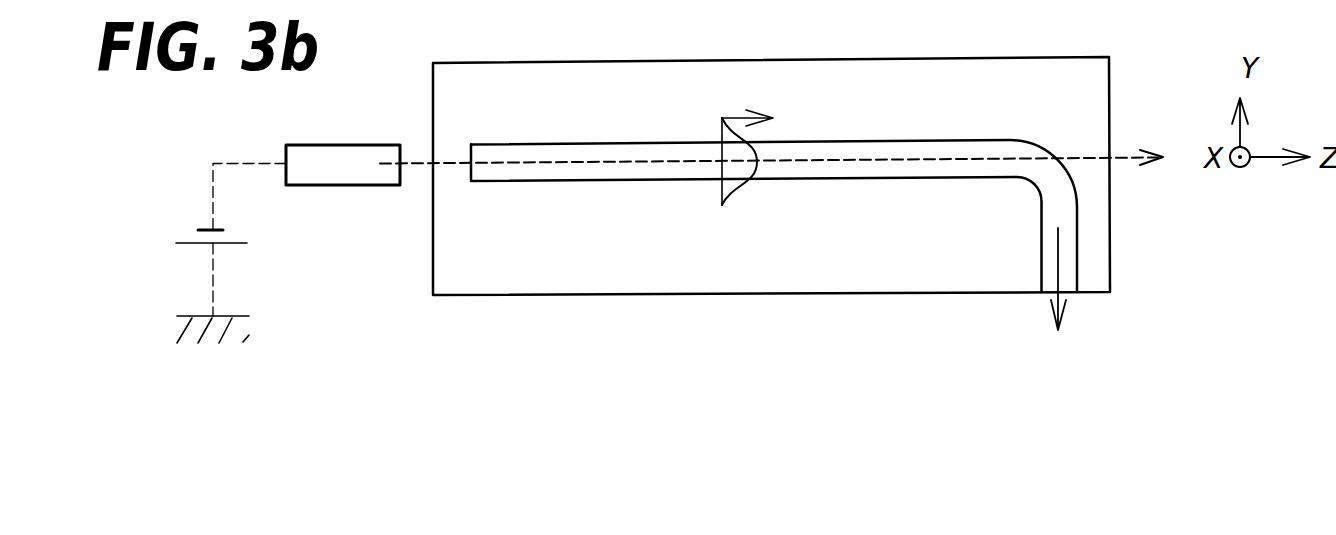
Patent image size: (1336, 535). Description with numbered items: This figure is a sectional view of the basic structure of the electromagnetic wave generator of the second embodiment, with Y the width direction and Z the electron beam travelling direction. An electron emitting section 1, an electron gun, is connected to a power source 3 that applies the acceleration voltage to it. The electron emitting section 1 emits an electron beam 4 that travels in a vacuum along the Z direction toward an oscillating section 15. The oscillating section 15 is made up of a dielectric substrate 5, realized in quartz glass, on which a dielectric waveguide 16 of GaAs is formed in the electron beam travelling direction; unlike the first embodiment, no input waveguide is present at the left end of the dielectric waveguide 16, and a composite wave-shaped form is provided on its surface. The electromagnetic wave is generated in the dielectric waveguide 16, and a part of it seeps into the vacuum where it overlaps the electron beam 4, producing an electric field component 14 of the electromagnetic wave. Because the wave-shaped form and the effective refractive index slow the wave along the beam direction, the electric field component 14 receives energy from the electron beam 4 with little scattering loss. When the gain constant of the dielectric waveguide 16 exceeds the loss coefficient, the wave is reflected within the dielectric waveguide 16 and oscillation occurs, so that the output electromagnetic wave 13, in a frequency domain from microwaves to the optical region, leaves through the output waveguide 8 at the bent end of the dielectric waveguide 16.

The electron emitting section 1 is at (341, 145).
The power source 3 is at (196, 239).
The electron beam 4 is at (417, 162).
The dielectric substrate 5 is at (713, 295).
The output waveguide 8 is at (1041, 249).
The output electromagnetic wave 13 is at (1060, 262).
The electric field component 14 is at (722, 123).
The oscillating section 15 is at (620, 306).
The dielectric waveguide 16 is at (957, 148).